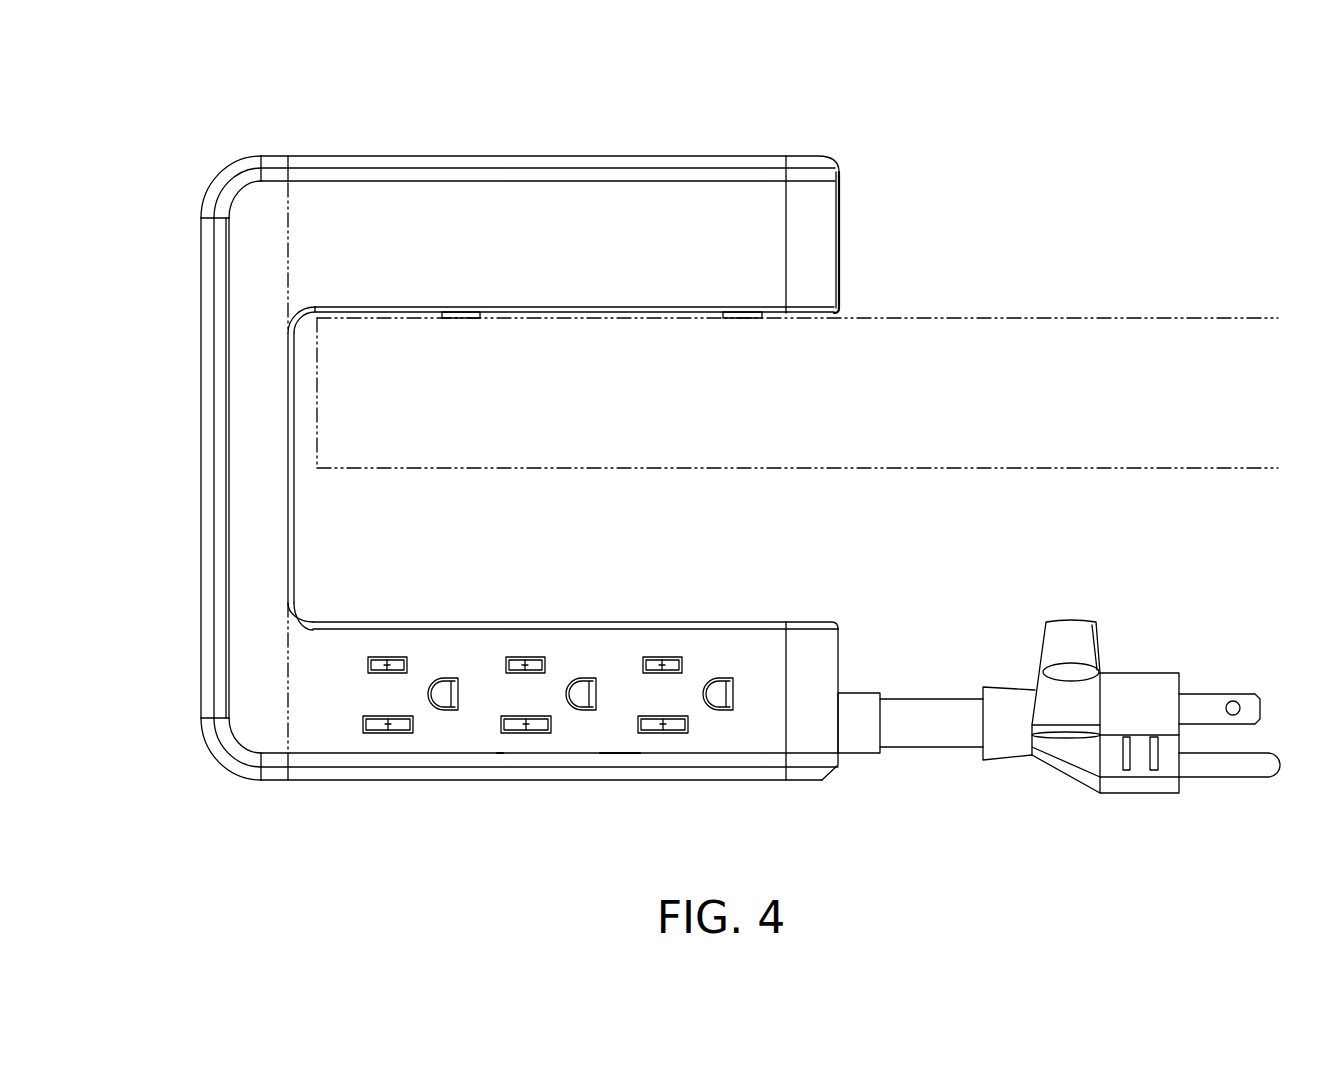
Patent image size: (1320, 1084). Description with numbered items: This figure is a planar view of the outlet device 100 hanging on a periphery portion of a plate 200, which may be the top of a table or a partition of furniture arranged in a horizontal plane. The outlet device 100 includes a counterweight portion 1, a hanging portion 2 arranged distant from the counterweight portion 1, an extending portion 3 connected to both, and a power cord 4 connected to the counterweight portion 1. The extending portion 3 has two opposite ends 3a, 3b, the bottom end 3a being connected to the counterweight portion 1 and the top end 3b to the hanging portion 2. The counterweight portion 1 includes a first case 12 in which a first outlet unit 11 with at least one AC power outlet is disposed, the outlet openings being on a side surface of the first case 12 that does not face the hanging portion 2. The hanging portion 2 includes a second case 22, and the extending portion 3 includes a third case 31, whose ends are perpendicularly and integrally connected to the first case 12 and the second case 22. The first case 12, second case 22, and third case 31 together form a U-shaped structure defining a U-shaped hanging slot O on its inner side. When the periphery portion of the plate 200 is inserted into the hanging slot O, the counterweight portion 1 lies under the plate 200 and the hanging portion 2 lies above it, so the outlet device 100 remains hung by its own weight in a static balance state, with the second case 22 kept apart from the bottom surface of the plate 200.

The outlet device 100 is at (700, 470).
The plate 200 is at (1108, 306).
The counterweight portion 1 is at (549, 703).
The first outlet unit 11 is at (548, 769).
The first case 12 is at (745, 735).
The hanging portion 2 is at (550, 189).
The second case 22 is at (600, 210).
The extending portion 3 is at (237, 470).
The third case 31 is at (250, 432).
The bottom end of the extending portion 3a is at (288, 722).
The top end of the extending portion 3b is at (288, 206).
The power cord 4 is at (1143, 660).
The U-shaped hanging slot O is at (785, 540).